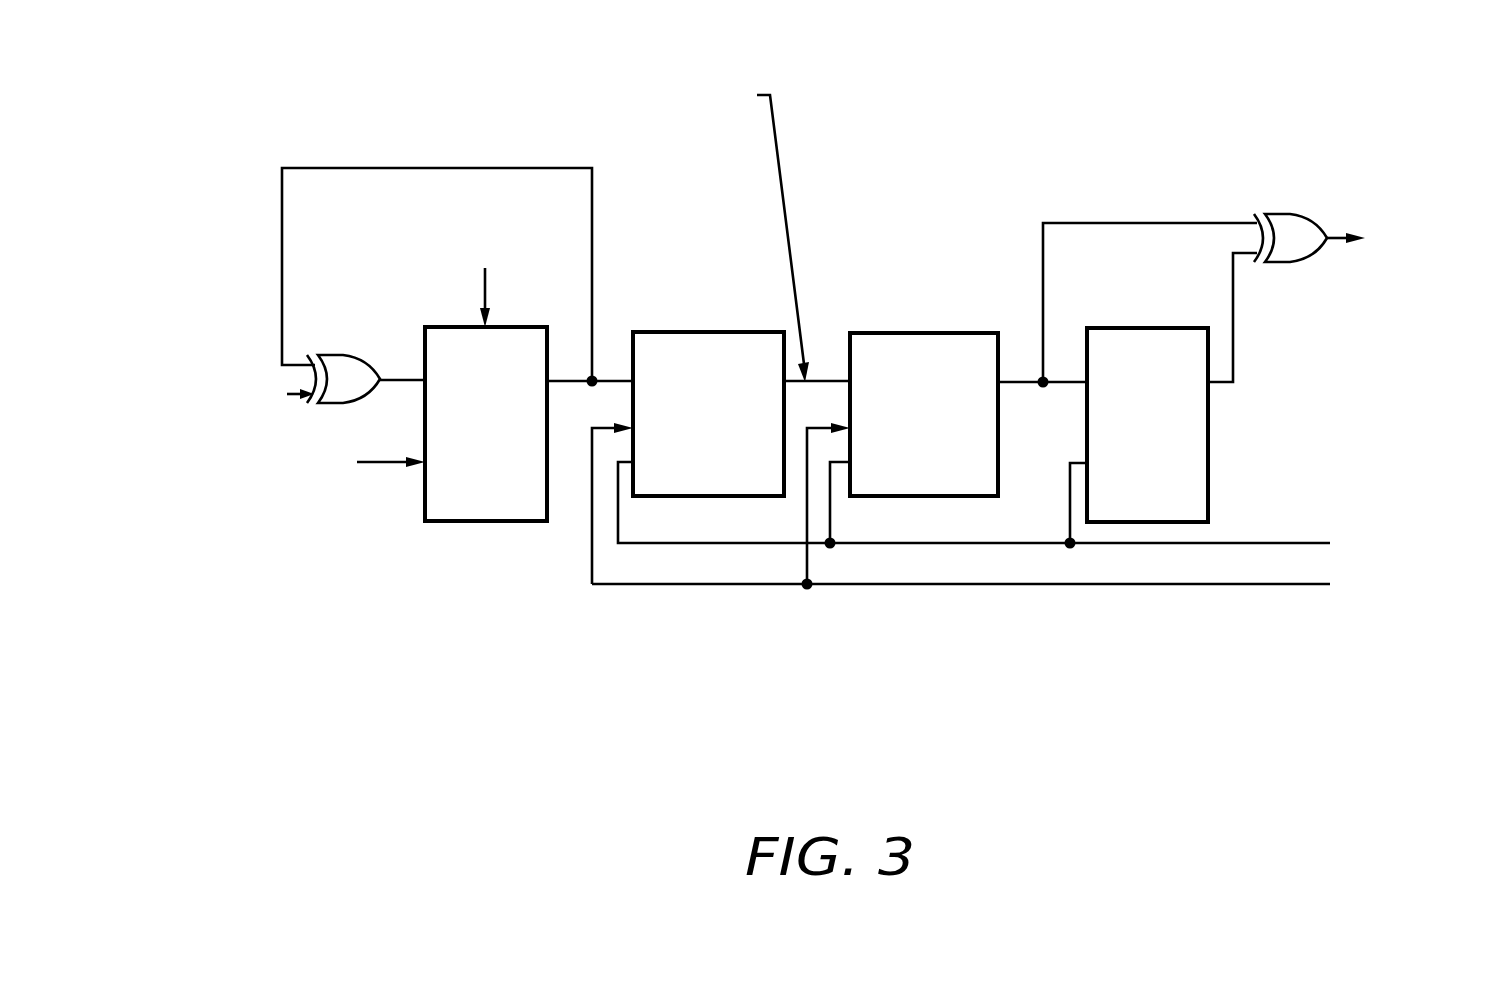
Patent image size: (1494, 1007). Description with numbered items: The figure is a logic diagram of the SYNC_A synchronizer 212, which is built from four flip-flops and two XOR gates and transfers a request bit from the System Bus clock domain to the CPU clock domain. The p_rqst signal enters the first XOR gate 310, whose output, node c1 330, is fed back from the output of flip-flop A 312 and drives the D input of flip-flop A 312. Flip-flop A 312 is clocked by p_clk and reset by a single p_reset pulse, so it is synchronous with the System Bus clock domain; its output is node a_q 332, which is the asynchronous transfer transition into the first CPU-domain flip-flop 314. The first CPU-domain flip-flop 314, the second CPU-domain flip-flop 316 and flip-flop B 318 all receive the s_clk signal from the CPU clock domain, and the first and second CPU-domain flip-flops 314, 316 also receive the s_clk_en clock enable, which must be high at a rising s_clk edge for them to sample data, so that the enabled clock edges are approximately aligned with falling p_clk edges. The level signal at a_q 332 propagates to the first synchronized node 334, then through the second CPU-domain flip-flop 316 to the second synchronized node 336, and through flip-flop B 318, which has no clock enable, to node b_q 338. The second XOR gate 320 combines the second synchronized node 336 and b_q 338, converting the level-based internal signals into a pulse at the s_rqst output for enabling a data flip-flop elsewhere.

The SYNC_A synchronizer 212 is at (826, 416).
The XOR gate 310 is at (343, 403).
The flip-flop A 312 is at (455, 522).
The flip-flop AS1 314 is at (710, 496).
The flip-flop AS2 316 is at (965, 496).
The flip-flop B 318 is at (1208, 487).
The XOR gate 320 is at (1290, 263).
The node c1 330 is at (398, 380).
The node a_q 332 is at (568, 386).
The node as1_q 334 is at (833, 380).
The node as2_q 336 is at (1113, 223).
The node b_q 338 is at (1233, 375).